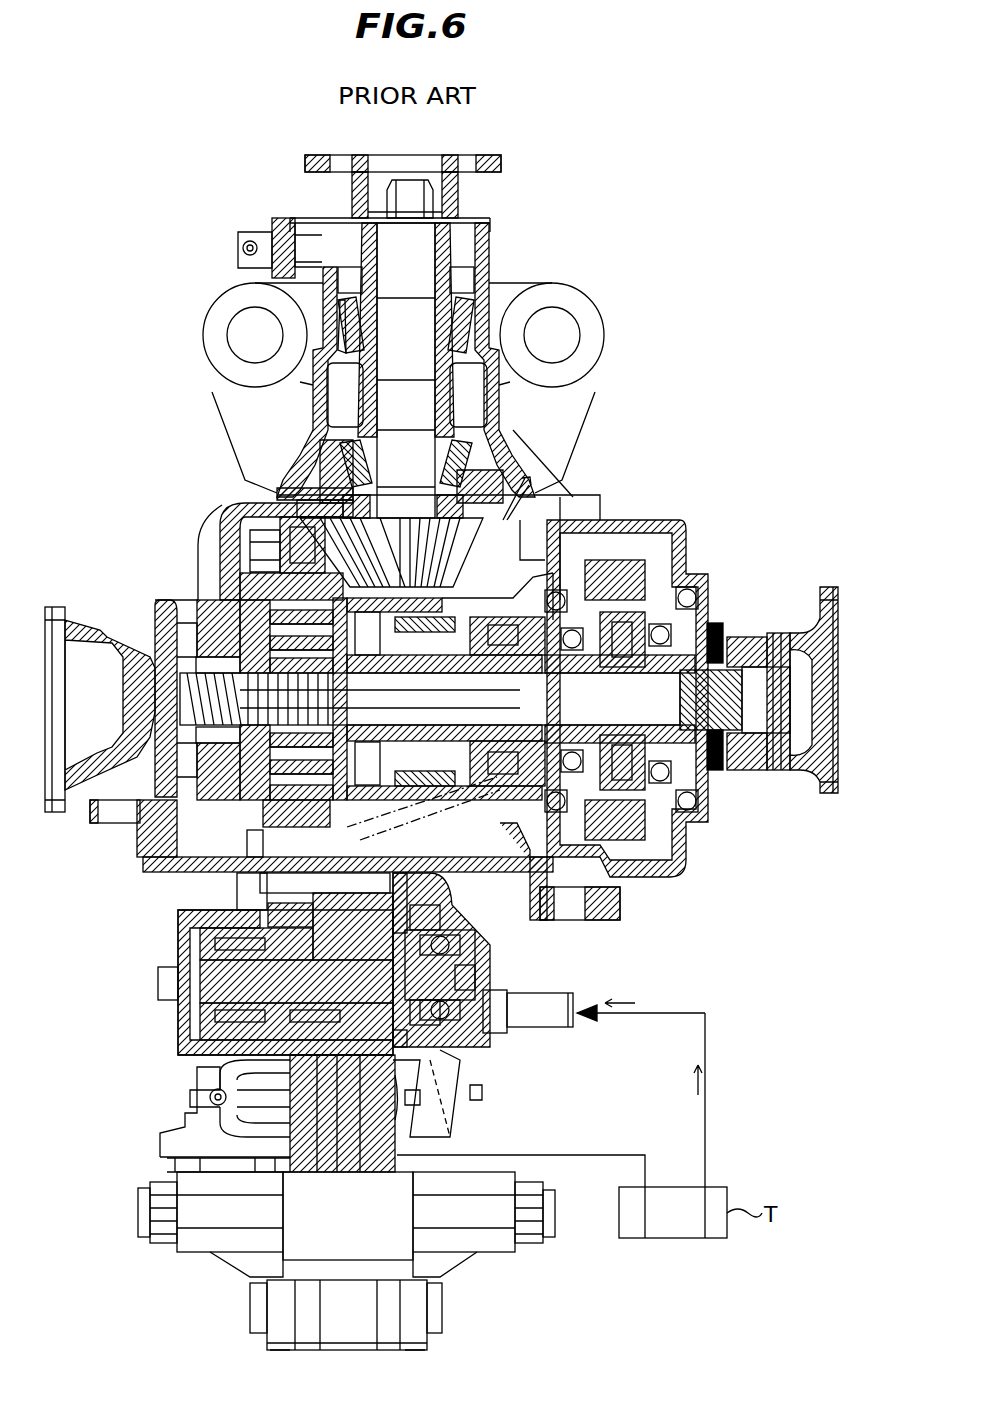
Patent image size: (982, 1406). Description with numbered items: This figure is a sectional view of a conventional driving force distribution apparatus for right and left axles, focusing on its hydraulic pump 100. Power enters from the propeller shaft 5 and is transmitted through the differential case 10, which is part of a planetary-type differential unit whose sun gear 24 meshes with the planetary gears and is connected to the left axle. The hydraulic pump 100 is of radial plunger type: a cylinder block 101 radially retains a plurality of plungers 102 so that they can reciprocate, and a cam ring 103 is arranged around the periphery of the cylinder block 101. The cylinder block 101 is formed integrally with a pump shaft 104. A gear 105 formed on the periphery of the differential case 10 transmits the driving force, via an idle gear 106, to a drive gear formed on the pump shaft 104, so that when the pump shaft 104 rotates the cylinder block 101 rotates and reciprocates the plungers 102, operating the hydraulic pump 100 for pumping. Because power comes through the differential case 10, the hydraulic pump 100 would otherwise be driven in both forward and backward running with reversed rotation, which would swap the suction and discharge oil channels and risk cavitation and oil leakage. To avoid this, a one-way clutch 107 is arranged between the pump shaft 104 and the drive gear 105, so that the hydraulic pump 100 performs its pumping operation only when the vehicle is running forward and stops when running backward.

The propeller shaft 5 is at (410, 338).
The differential case 10 is at (240, 597).
The sun gear 24 is at (158, 598).
The hydraulic pump 100 is at (150, 920).
The cylinder block 101 is at (460, 943).
The plungers 102 is at (443, 903).
The cam ring 103 is at (475, 1093).
The pump shaft 104 is at (212, 1007).
The gear 105 is at (268, 500).
The idle gear 106 is at (267, 921).
The one-way clutch 107 is at (217, 950).